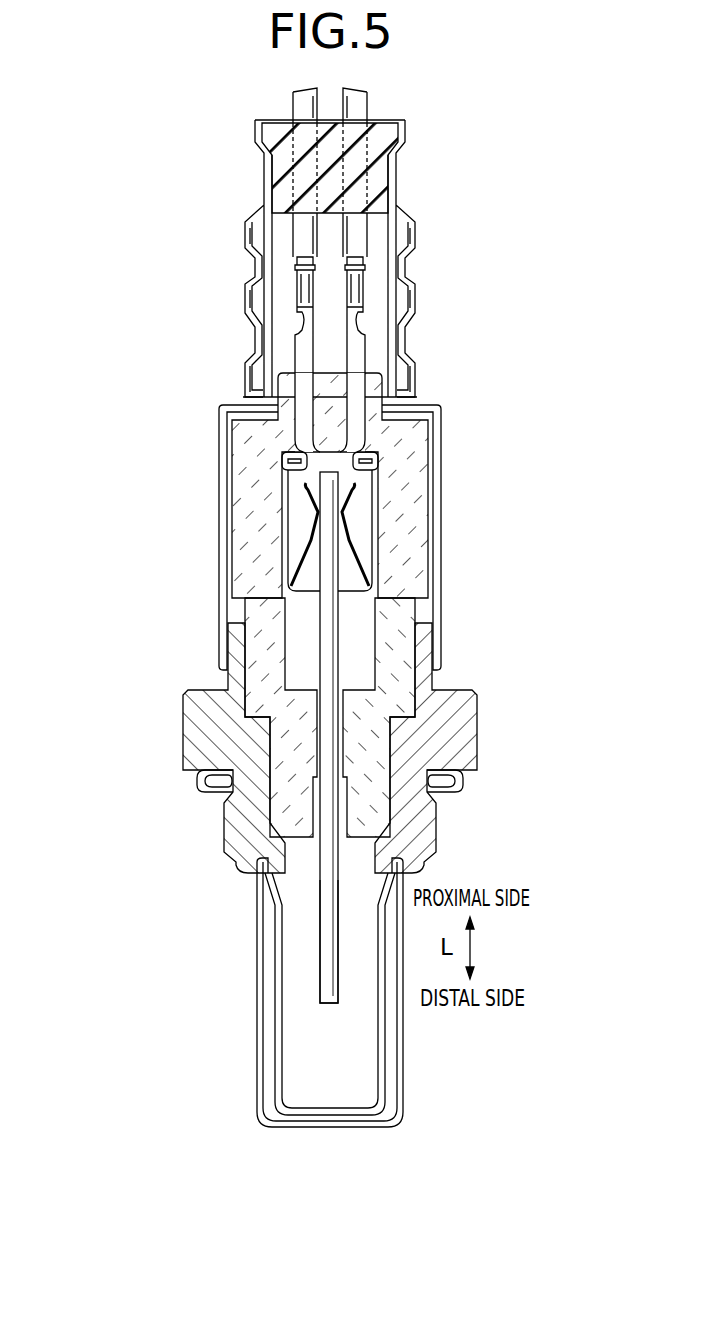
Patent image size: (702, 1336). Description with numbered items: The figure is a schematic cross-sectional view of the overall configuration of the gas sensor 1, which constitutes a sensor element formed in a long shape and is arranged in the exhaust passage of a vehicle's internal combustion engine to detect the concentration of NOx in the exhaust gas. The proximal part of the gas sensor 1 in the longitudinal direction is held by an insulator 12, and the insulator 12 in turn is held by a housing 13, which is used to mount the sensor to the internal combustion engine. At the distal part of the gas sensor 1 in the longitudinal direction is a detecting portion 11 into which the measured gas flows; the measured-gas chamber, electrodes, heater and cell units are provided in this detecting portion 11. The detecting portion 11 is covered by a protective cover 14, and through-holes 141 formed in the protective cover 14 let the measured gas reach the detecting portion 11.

The gas sensor 1 is at (333, 663).
The detecting portion 11 is at (328, 978).
The insulator 12 is at (377, 750).
The housing 13 is at (210, 723).
The protective cover 14 is at (252, 992).
The through-holes 141 is at (258, 1070).